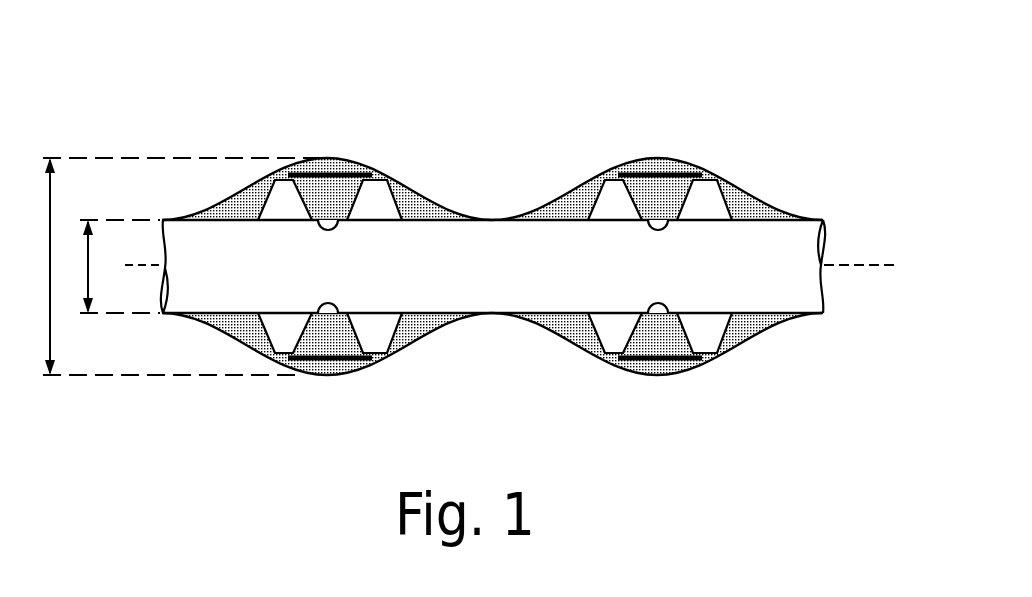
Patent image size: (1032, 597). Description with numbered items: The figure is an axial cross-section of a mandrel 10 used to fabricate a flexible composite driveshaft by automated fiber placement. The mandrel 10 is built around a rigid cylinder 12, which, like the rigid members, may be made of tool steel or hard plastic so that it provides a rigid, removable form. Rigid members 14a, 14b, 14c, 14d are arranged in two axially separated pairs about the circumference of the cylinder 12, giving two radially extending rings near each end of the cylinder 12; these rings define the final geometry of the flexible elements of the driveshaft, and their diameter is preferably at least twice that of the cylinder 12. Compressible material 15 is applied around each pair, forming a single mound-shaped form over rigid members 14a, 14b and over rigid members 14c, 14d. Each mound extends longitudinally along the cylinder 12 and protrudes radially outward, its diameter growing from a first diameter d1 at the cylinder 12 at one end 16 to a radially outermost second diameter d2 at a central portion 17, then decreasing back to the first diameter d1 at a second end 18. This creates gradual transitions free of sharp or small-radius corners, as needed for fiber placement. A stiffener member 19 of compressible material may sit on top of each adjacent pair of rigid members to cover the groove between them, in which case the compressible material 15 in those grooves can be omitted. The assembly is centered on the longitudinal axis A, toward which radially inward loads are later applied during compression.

The mandrel 10 is at (823, 90).
The rigid cylinder 12 is at (506, 282).
The rigid member 14a is at (282, 198).
The rigid member 14b is at (375, 199).
The rigid member 14c is at (612, 198).
The rigid member 14d is at (700, 199).
The compressible material 15 is at (747, 325).
The one end 16 is at (526, 320).
The central portion 17 is at (667, 384).
The second end 18 is at (824, 318).
The stiffener member 19 is at (666, 177).
The axis A is at (860, 266).
The first diameter d1 is at (117, 266).
The second diameter d2 is at (180, 266).